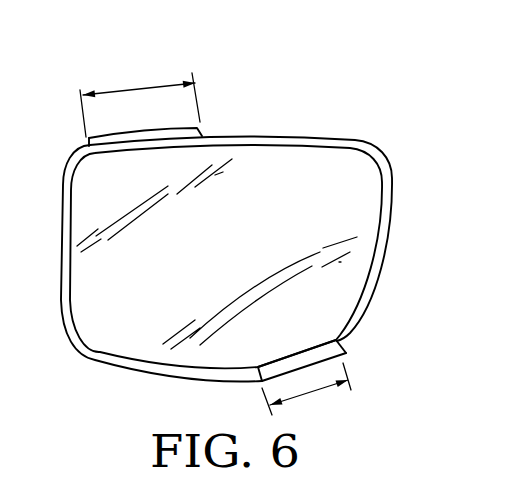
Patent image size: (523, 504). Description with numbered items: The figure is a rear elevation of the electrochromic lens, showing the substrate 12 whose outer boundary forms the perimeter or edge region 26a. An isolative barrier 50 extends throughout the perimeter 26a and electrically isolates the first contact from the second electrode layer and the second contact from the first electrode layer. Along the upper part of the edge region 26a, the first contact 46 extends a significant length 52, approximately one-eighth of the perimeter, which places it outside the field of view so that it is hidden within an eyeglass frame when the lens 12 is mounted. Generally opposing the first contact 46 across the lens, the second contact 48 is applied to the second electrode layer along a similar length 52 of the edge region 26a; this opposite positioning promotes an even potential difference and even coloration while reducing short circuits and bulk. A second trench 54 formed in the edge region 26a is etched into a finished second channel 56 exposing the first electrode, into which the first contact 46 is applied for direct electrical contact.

The substrate 12 is at (233, 277).
The edge region 26a is at (369, 93).
The first contact 46 is at (165, 130).
The second contact 48 is at (341, 352).
The isolative barrier 50 is at (390, 176).
The length 52 is at (135, 90).
The second trench 54 is at (130, 149).
The second channel 56 is at (303, 358).